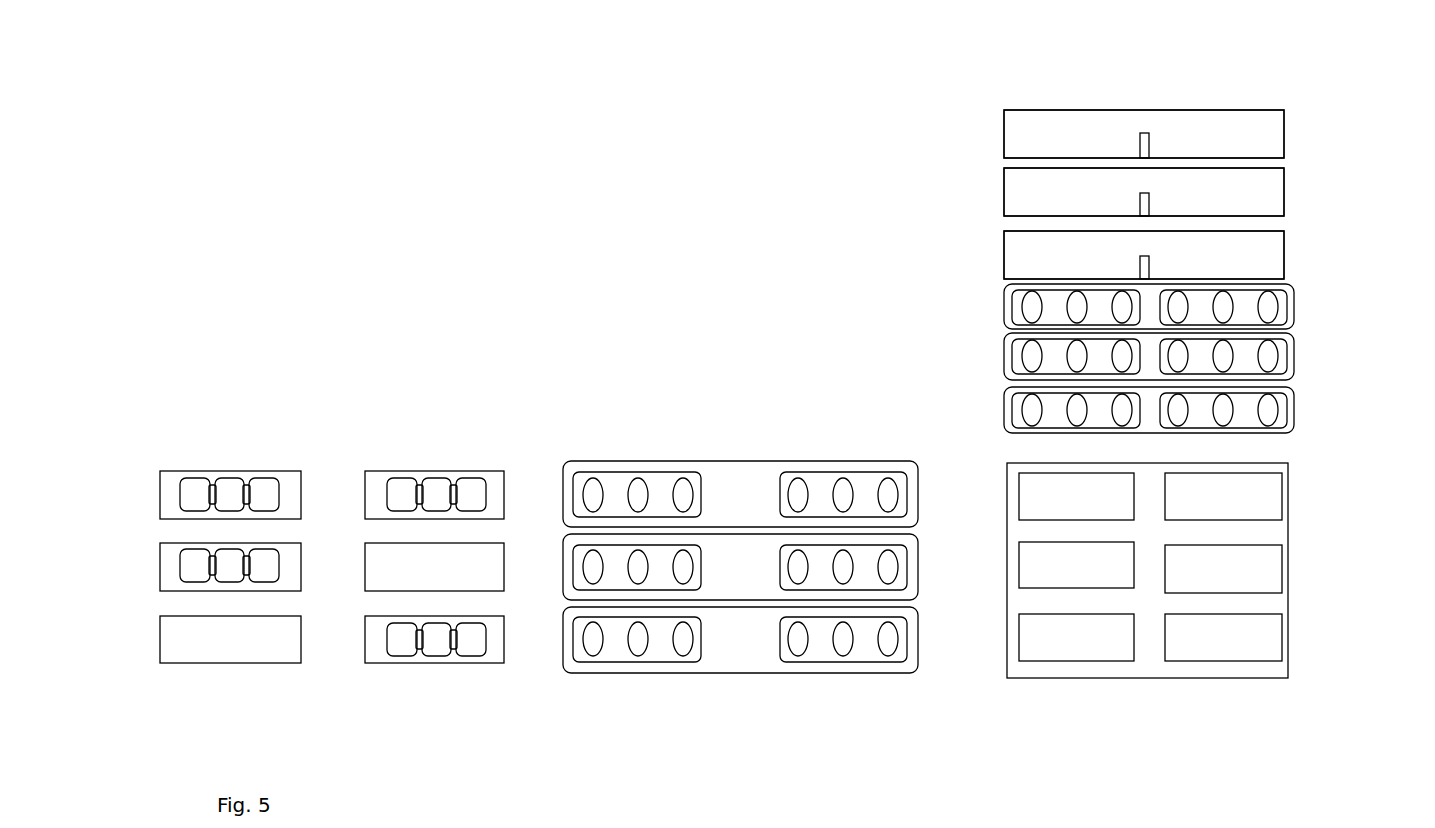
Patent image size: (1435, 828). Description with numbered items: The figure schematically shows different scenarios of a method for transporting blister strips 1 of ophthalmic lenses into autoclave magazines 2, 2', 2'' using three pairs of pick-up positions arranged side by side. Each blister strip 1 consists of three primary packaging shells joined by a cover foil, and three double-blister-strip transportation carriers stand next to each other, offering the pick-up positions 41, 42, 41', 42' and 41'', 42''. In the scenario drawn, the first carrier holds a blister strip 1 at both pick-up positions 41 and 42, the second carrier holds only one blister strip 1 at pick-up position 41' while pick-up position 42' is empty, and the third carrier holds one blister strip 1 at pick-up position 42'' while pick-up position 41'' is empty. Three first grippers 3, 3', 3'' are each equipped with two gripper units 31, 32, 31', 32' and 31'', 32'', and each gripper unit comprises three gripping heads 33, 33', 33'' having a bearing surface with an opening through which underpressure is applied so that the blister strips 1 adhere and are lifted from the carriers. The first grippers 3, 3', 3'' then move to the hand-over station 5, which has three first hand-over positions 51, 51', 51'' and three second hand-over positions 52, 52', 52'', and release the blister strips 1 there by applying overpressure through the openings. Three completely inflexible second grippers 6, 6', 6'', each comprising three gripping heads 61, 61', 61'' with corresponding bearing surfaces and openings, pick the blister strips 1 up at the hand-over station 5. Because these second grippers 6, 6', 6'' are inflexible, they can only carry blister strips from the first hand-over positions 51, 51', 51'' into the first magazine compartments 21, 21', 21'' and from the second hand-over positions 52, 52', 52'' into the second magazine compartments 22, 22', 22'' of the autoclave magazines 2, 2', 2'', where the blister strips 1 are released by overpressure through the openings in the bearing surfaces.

The blister strip 1 is at (195, 483).
The autoclave magazine 2 is at (1193, 130).
The autoclave magazine 2' is at (1200, 181).
The autoclave magazine 2'' is at (1198, 249).
The first magazine compartment 21 is at (1060, 96).
The first magazine compartment 21' is at (1027, 179).
The first magazine compartment 21'' is at (1027, 242).
The second magazine compartment 22 is at (1212, 96).
The second magazine compartment 22' is at (1259, 192).
The second magazine compartment 22'' is at (1263, 259).
The first gripper 3 is at (740, 453).
The first gripper 3' is at (740, 637).
The first gripper 3'' is at (740, 669).
The gripper unit 31 is at (637, 460).
The gripper unit 31' is at (611, 490).
The gripper unit 31'' is at (637, 670).
The gripper unit 32 is at (843, 460).
The gripper unit 32' is at (843, 642).
The gripper unit 32'' is at (854, 670).
The gripping head 33 is at (930, 494).
The gripping head 33' is at (933, 563).
The gripping head 33'' is at (935, 645).
The pick-up position 41 is at (230, 454).
The pick-up position 41' is at (180, 567).
The pick-up position 41'' is at (179, 637).
The pick-up position 42 is at (434, 451).
The pick-up position 42' is at (465, 635).
The pick-up position 42'' is at (417, 673).
The hand-over station 5 is at (1346, 580).
The first hand-over position 51 is at (1207, 478).
The first hand-over position 51' is at (1196, 550).
The first hand-over position 51'' is at (1079, 678).
The second hand-over position 52 is at (1288, 493).
The second hand-over position 52' is at (1279, 596).
The second hand-over position 52'' is at (1229, 678).
The second gripper 6 is at (1102, 303).
The second gripper 6' is at (1093, 357).
The second gripper 6'' is at (1093, 410).
The gripping head 61 is at (1320, 307).
The gripping head 61' is at (1323, 356).
The gripping head 61'' is at (1326, 409).